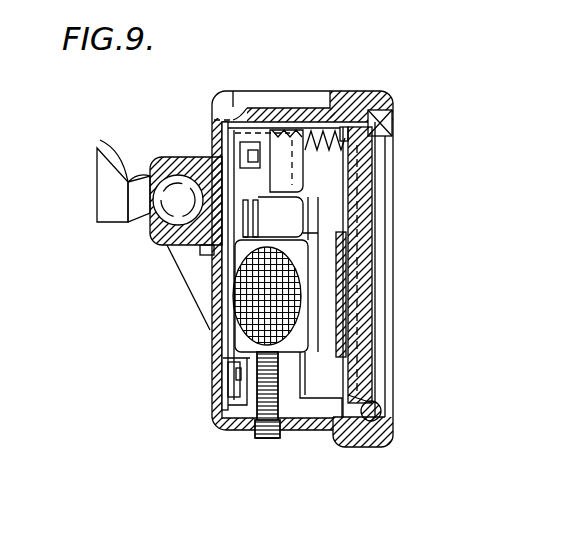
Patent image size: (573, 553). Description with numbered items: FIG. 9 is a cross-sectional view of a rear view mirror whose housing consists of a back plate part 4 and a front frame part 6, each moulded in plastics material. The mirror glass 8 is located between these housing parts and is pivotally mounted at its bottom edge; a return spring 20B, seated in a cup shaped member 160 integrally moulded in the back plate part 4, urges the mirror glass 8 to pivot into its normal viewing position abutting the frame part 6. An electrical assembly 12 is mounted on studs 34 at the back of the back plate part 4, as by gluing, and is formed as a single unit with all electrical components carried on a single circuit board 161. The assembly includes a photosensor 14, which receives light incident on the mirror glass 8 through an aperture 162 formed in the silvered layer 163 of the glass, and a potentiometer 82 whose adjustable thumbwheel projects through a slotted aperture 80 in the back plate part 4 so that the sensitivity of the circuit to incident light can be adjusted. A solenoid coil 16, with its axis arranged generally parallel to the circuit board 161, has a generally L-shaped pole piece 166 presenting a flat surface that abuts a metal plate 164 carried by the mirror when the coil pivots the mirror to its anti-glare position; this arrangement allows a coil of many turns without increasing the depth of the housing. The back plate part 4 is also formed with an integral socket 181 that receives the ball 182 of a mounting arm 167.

The back plate part 4 is at (290, 107).
The front frame part 6 is at (393, 132).
The mirror glass 8 is at (372, 246).
The electrical assembly 12 is at (220, 126).
The photosensor 14 is at (295, 170).
The solenoid coil 16 is at (250, 305).
The return spring 20B is at (318, 117).
The studs 34 is at (220, 127).
The slotted aperture 80 is at (285, 433).
The potentiometer 82 is at (257, 430).
The cup shaped members 160 is at (241, 80).
The circuit board 161 is at (225, 275).
The aperture 162 is at (356, 165).
The silvered layer 163 is at (345, 193).
The metal plate 164 is at (350, 304).
The pole piece 166 is at (358, 255).
The mounting arm 167 is at (124, 200).
The socket 181 is at (110, 138).
The ball 182 is at (167, 250).